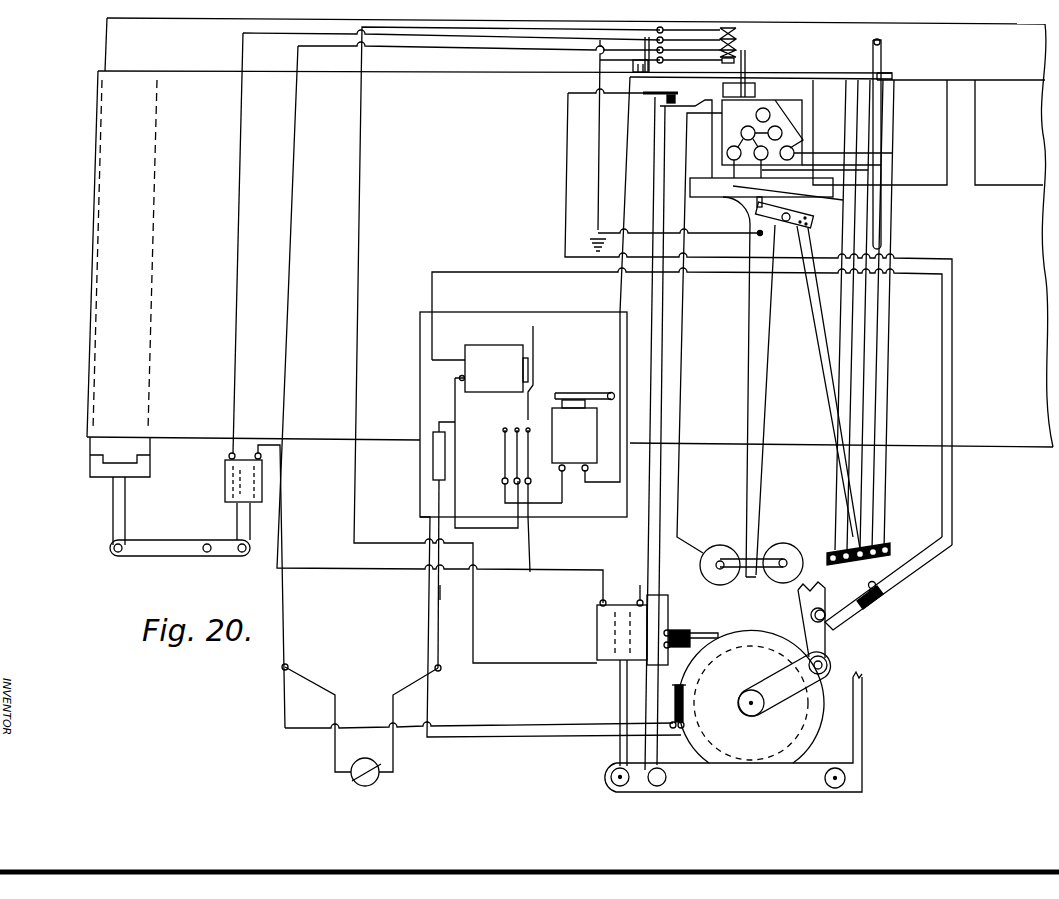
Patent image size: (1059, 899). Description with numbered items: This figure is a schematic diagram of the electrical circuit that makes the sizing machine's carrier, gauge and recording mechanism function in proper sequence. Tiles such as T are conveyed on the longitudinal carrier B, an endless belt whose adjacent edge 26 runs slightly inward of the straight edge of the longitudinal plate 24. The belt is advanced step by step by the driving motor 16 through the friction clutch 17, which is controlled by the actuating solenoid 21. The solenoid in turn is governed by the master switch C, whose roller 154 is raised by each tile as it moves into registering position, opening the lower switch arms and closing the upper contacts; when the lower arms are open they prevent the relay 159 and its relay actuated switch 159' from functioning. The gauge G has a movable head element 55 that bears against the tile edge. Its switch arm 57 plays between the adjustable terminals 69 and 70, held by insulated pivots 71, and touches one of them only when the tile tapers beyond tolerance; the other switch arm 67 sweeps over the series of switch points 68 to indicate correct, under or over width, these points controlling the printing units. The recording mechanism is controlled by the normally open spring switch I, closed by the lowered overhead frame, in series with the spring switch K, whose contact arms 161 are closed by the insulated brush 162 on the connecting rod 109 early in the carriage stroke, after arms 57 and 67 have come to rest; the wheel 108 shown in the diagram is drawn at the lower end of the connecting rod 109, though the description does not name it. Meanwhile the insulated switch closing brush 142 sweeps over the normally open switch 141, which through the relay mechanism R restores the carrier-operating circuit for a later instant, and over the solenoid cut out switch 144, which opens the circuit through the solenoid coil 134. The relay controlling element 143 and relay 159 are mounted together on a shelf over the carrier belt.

The driving motor 16 is at (352, 770).
The friction clutch 17 is at (103, 472).
The actuating solenoid 21 is at (225, 490).
The longitudinal plate 24 is at (576, 49).
The adjacent edge of the carrier belt 26 is at (1025, 235).
The gauge head element 55 is at (692, 234).
The electrical switch arm 57 is at (750, 387).
The electrical switch arm 67 is at (825, 374).
The switch points 68 is at (886, 545).
The adjustable terminal 69 is at (715, 548).
The adjustable terminal 70 is at (789, 546).
The insulated pivots 71 is at (705, 566).
The ratchet wheel 108 is at (751, 696).
The connecting rod 109 is at (805, 600).
The solenoid coil 134 is at (597, 638).
The spring restoring normally open electric switch 141 is at (688, 700).
The insulated switch closing brush 142 is at (827, 652).
The relay controlling element 143 is at (494, 368).
The solenoid cut out switch 144 is at (688, 632).
The roller 154 is at (744, 86).
The relay 159 is at (583, 448).
The relay actuated switch 159' is at (512, 500).
The spring contact arms 161 is at (862, 602).
The insulated brush 162 is at (827, 610).
The longitudinal carrier B is at (110, 370).
The master switch C is at (738, 42).
The relay F is at (803, 100).
The gauge G is at (766, 203).
The spring switch I is at (684, 105).
The spring switch K is at (880, 597).
The relay mechanism R is at (523, 420).
The tile T is at (786, 58).